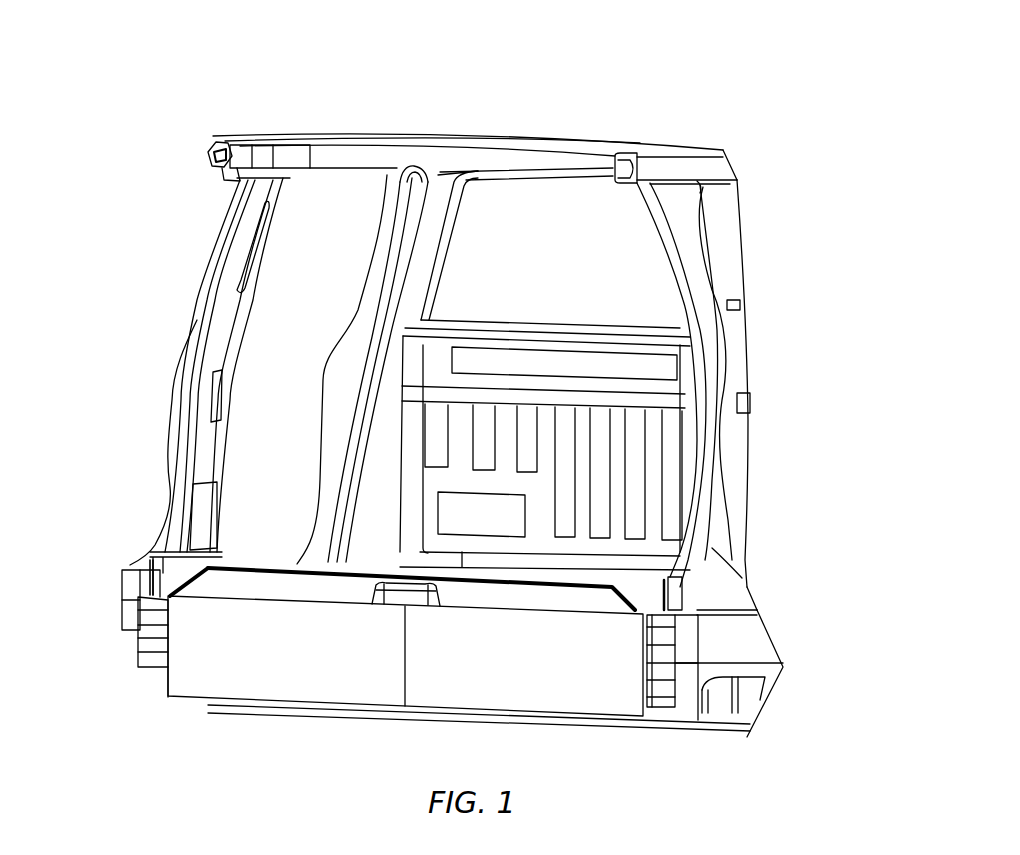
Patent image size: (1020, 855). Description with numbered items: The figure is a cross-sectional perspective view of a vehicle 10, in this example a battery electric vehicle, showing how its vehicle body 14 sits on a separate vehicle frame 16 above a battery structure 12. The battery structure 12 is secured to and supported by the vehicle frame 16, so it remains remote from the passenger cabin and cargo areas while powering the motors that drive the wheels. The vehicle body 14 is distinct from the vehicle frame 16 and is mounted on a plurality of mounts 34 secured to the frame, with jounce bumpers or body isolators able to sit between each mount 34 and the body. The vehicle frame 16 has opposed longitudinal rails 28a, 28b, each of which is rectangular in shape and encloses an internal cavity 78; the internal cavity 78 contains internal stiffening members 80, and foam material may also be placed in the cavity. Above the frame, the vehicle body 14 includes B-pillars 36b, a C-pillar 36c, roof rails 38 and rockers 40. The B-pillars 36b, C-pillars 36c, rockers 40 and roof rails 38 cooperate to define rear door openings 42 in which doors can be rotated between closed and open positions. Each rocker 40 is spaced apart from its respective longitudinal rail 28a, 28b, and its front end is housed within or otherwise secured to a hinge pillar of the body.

The vehicle 10 is at (771, 86).
The battery structure 12 is at (648, 716).
The vehicle body 14 is at (710, 188).
The vehicle frame 16 is at (119, 676).
The longitudinal rail 28a is at (138, 629).
The longitudinal rail 28b is at (685, 686).
The mount 34 is at (750, 681).
The B-pillar 36b is at (706, 280).
The C-pillar 36c is at (423, 212).
The roof rail 38 is at (215, 149).
The rocker 40 is at (117, 578).
The rear door opening 42 is at (714, 233).
The internal cavity 78 is at (146, 604).
The internal stiffening member 80 is at (150, 661).